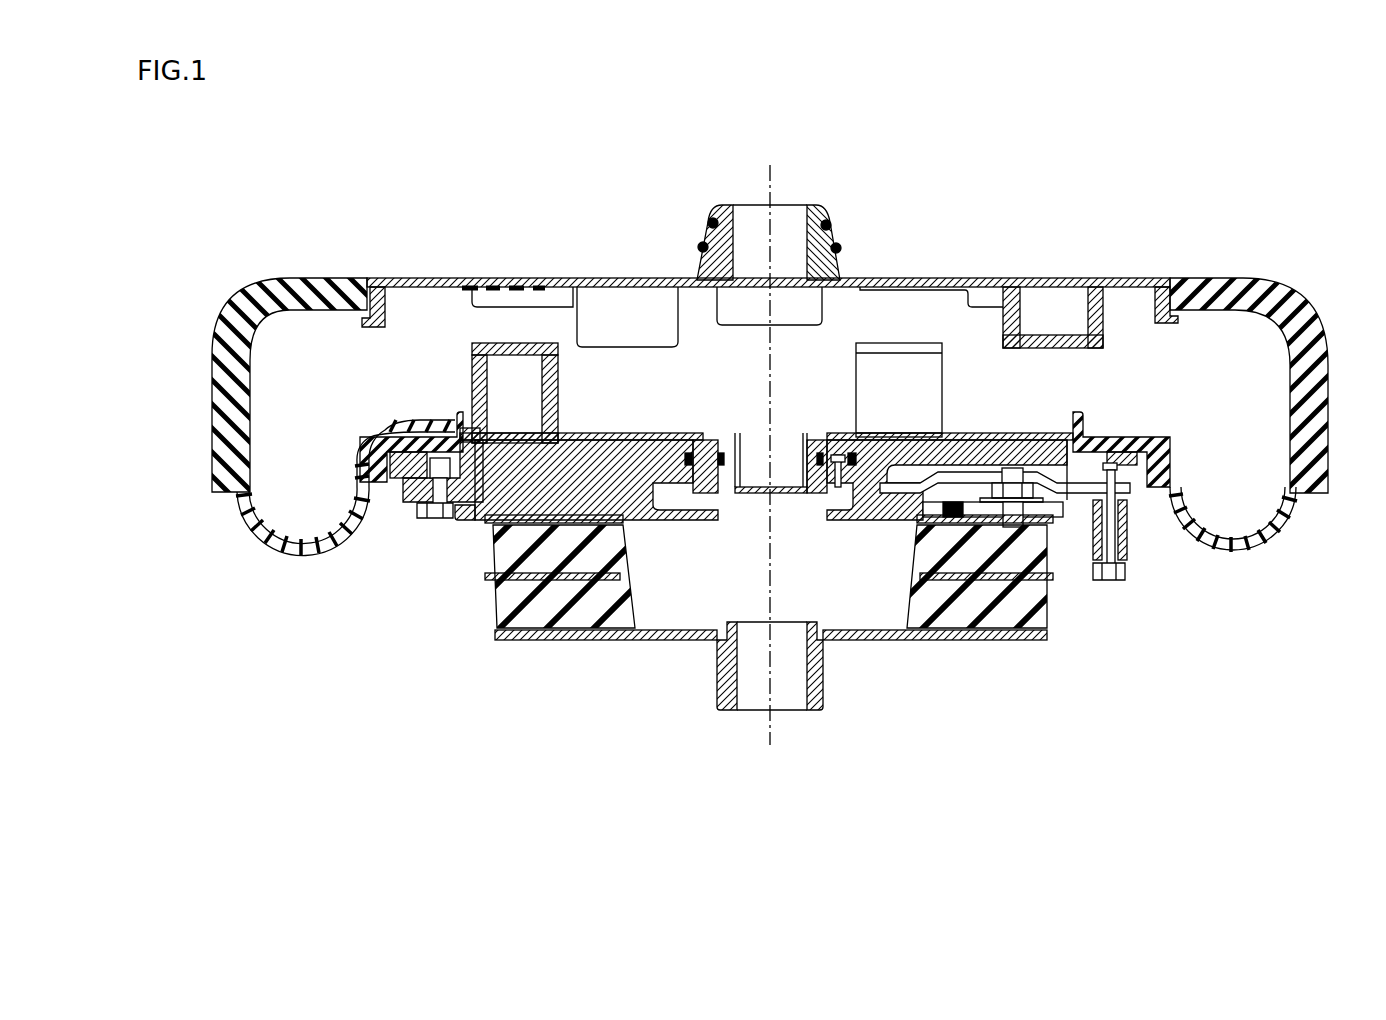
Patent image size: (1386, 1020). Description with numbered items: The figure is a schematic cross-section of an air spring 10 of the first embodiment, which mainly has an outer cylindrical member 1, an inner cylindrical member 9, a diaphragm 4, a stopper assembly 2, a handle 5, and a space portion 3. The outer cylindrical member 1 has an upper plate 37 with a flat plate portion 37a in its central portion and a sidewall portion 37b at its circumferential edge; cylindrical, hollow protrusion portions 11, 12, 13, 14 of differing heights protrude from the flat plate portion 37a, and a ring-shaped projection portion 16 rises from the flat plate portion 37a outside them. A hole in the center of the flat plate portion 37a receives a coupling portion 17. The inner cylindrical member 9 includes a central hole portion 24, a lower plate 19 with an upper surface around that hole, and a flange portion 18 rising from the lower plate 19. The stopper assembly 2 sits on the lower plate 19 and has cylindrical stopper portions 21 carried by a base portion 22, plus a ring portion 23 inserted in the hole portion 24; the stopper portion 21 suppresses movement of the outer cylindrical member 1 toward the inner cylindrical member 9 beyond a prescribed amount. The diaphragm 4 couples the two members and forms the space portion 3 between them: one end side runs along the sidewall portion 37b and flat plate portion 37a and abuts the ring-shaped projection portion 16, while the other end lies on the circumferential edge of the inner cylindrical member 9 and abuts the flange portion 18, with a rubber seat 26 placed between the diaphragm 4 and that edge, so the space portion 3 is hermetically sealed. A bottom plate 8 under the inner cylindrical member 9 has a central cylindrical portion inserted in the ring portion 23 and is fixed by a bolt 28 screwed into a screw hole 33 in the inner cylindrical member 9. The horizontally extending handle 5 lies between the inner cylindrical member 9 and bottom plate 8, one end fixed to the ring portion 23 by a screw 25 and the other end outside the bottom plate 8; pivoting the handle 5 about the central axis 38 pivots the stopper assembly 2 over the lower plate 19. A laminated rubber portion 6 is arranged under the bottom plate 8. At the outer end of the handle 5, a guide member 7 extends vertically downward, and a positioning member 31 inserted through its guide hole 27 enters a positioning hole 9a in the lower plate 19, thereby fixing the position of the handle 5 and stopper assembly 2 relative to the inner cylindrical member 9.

The outer cylindrical member 1 is at (1213, 135).
The stopper assembly 2 is at (518, 236).
The space portion 3 is at (1263, 510).
The diaphragm 4 is at (1244, 545).
The handle 5 is at (1080, 487).
The laminated rubber portion 6 is at (587, 613).
The guide member 7 is at (1127, 540).
The bottom plate 8 is at (1055, 507).
The inner cylindrical member 9 is at (480, 591).
The positioning hole 9a is at (1138, 478).
The air spring 10 is at (1252, 150).
The protrusion portion 11 is at (560, 288).
The protrusion portion 12 is at (560, 300).
The protrusion portion 13 is at (752, 303).
The protrusion portion 14 is at (1003, 318).
The ring-shaped projection portion 16 is at (1192, 300).
The coupling portion 17 is at (810, 220).
The flange portion 18 is at (322, 530).
The lower plate 19 is at (503, 460).
The stopper portion 21 is at (480, 420).
The base portion 22 is at (610, 440).
The ring portion 23 is at (683, 472).
The hole portion 24 is at (700, 487).
The screw 25 is at (837, 487).
The rubber seat 26 is at (1165, 493).
The guide hole 27 is at (1103, 542).
The bolt 28 is at (437, 512).
The positioning member 31 is at (1112, 573).
The screw hole 33 is at (430, 470).
The upper plate 37 is at (1143, 172).
The flat plate portion 37a is at (1005, 320).
The sidewall portion 37b is at (1133, 283).
The central axis 38 is at (771, 712).